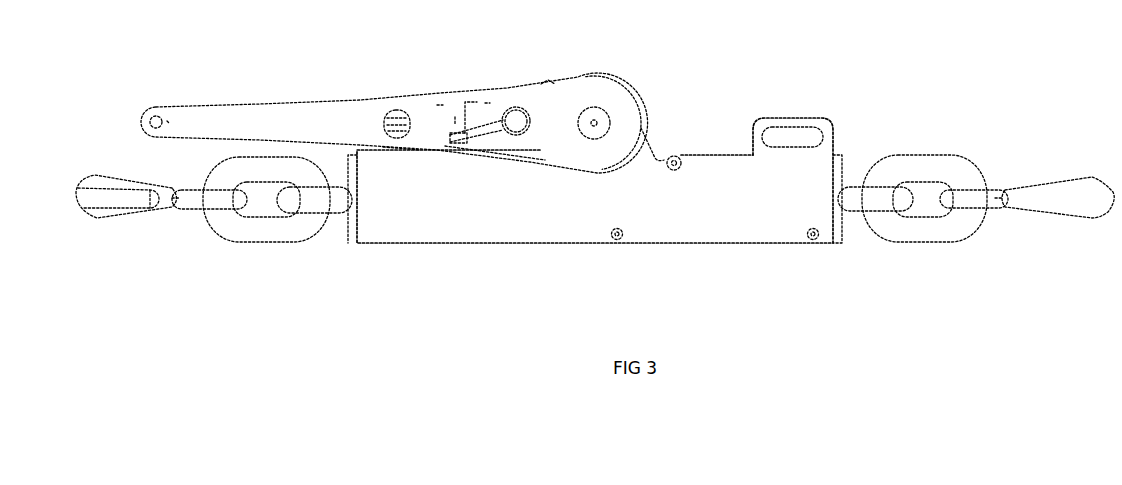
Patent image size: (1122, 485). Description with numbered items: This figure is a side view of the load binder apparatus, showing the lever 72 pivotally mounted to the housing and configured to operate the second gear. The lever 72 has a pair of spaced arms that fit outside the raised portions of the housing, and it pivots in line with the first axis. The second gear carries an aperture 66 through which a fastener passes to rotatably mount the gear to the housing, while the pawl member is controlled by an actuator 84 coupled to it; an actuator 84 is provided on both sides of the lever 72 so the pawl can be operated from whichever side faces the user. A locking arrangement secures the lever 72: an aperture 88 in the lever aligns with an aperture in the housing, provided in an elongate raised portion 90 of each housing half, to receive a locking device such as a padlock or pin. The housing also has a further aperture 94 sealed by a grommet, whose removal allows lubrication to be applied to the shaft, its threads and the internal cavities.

The lever 72 is at (290, 118).
The actuator 84 is at (472, 101).
The aperture 88 is at (390, 110).
The elongate raised portion 90 is at (763, 118).
The aperture 66 is at (810, 135).
The further aperture 94 is at (700, 176).